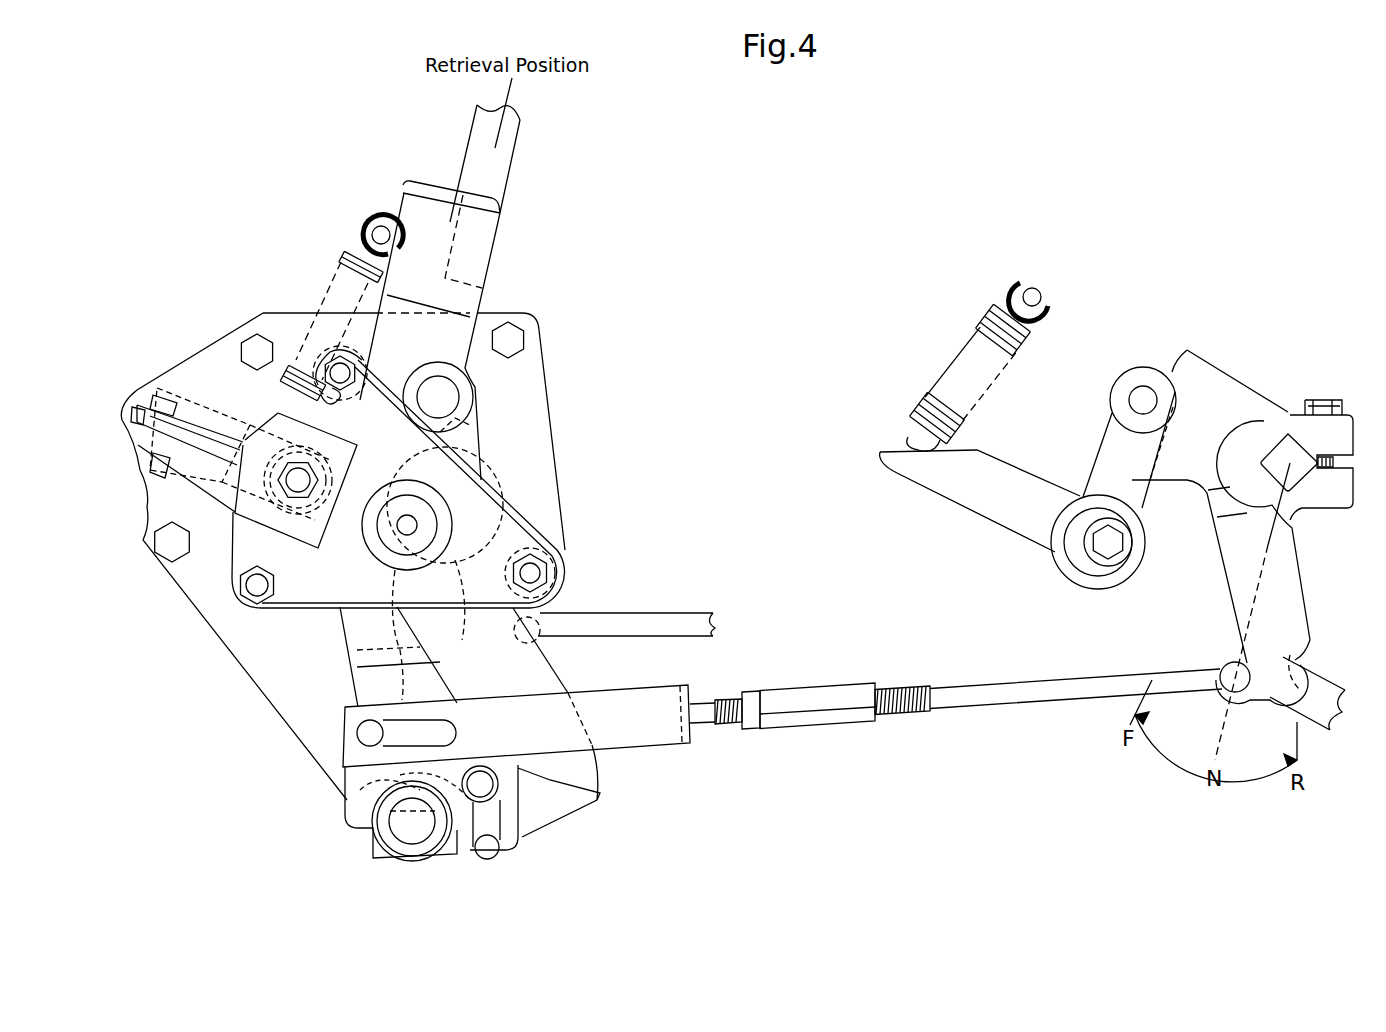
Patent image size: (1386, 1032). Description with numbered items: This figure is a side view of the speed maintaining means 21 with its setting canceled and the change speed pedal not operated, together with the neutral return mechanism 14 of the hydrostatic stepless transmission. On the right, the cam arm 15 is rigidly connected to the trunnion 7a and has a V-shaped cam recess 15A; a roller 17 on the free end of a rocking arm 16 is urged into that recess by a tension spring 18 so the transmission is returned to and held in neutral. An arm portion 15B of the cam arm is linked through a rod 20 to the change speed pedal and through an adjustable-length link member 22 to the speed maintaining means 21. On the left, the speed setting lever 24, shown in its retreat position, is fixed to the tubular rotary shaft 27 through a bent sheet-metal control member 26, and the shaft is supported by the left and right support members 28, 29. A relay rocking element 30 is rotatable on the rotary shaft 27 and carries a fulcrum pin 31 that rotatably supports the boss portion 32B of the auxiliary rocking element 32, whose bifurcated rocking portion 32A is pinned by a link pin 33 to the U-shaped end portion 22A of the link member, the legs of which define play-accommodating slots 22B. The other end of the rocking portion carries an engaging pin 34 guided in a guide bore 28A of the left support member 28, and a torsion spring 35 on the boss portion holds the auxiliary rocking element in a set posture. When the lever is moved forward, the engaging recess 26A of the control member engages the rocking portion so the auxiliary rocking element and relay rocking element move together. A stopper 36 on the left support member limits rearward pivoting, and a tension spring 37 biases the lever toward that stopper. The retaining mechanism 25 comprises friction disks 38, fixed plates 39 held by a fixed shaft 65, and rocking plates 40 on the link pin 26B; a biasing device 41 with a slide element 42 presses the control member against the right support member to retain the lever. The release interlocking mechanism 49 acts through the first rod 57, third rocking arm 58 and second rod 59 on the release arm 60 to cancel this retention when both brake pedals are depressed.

The trunnion 7a is at (1291, 440).
The neutral return mechanism 14 is at (1132, 335).
The cam arm 15 is at (1222, 600).
The V-shaped cam recess 15A is at (1170, 367).
The arm portion 15B is at (1300, 598).
The rocking arm 16 is at (1100, 450).
The roller 17 is at (1123, 395).
The tension spring 18 is at (988, 322).
The rod 20 is at (1318, 692).
The speed maintaining means 21 is at (222, 252).
The link member 22 is at (953, 712).
The end portion 22A is at (670, 738).
The slots 22B is at (440, 700).
The speed setting lever 24 is at (515, 157).
The retaining mechanism 25 is at (492, 443).
The control member 26 is at (407, 215).
The engaging recess 26A is at (530, 780).
The link pin 26B is at (430, 388).
The tubular rotary shaft 27 is at (427, 508).
The left support member 28 is at (263, 688).
The guide bore 28A is at (497, 850).
The right support member 29 is at (260, 612).
The relay rocking element 30 is at (352, 647).
The fulcrum pin 31 is at (400, 823).
The auxiliary rocking element 32 is at (335, 815).
The rocking portion 32A is at (500, 805).
The boss portion 32B is at (412, 850).
The link pin 33 is at (365, 725).
The engaging pin 34 is at (480, 773).
The torsion spring 35 is at (457, 858).
The stopper 36 is at (332, 343).
The tension spring 37 is at (348, 257).
The friction disks 38 is at (455, 418).
The fixed plates 39 is at (520, 547).
The rocking plates 40 is at (470, 388).
The biasing device 41 is at (198, 390).
The slide element 42 is at (405, 530).
The release interlocking mechanism 49 is at (685, 600).
The first rod 57 is at (693, 630).
The third rocking arm 58 is at (560, 610).
The second rod 59 is at (225, 552).
The release arm 60 is at (137, 420).
The fixed shaft 65 is at (570, 588).